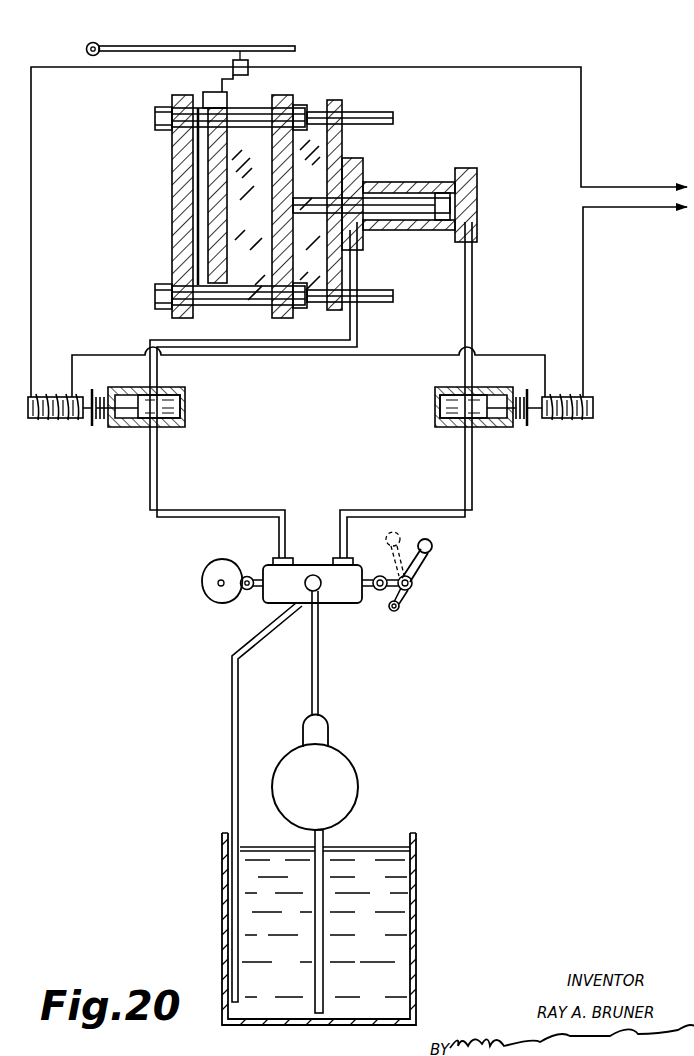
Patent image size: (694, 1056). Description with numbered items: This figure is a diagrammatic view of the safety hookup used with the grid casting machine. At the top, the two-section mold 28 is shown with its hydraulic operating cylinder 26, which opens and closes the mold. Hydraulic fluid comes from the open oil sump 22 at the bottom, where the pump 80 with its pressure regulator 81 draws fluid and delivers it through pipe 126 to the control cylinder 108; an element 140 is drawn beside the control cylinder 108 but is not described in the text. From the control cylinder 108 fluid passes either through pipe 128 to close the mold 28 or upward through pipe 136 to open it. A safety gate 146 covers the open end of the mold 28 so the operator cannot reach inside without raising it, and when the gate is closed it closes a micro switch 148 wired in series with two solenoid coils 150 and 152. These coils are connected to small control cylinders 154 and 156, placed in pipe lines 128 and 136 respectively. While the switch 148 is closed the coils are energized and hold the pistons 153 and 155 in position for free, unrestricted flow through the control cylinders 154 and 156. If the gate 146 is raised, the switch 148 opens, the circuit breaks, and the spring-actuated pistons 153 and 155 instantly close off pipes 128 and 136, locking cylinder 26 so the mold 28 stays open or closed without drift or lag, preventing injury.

The safety gate 146 is at (215, 46).
The micro switch 148 is at (249, 70).
The two-section mold 28 is at (173, 243).
The hydraulic operating cylinder 26 is at (423, 182).
The pipe 128 is at (479, 290).
The pipe 136 is at (358, 344).
The solenoid coil 152 is at (57, 427).
The piston 155 is at (185, 408).
The control cylinder 156 is at (163, 428).
The piston 153 is at (452, 395).
The control cylinder 154 is at (457, 428).
The solenoid coil 150 is at (586, 397).
The control cylinder 108 is at (330, 598).
The hand lever 140 is at (421, 573).
The pipe 126 is at (312, 698).
The pressure regulator 81 is at (326, 721).
The pump 80 is at (349, 761).
The fluid reservoir 22 is at (418, 904).